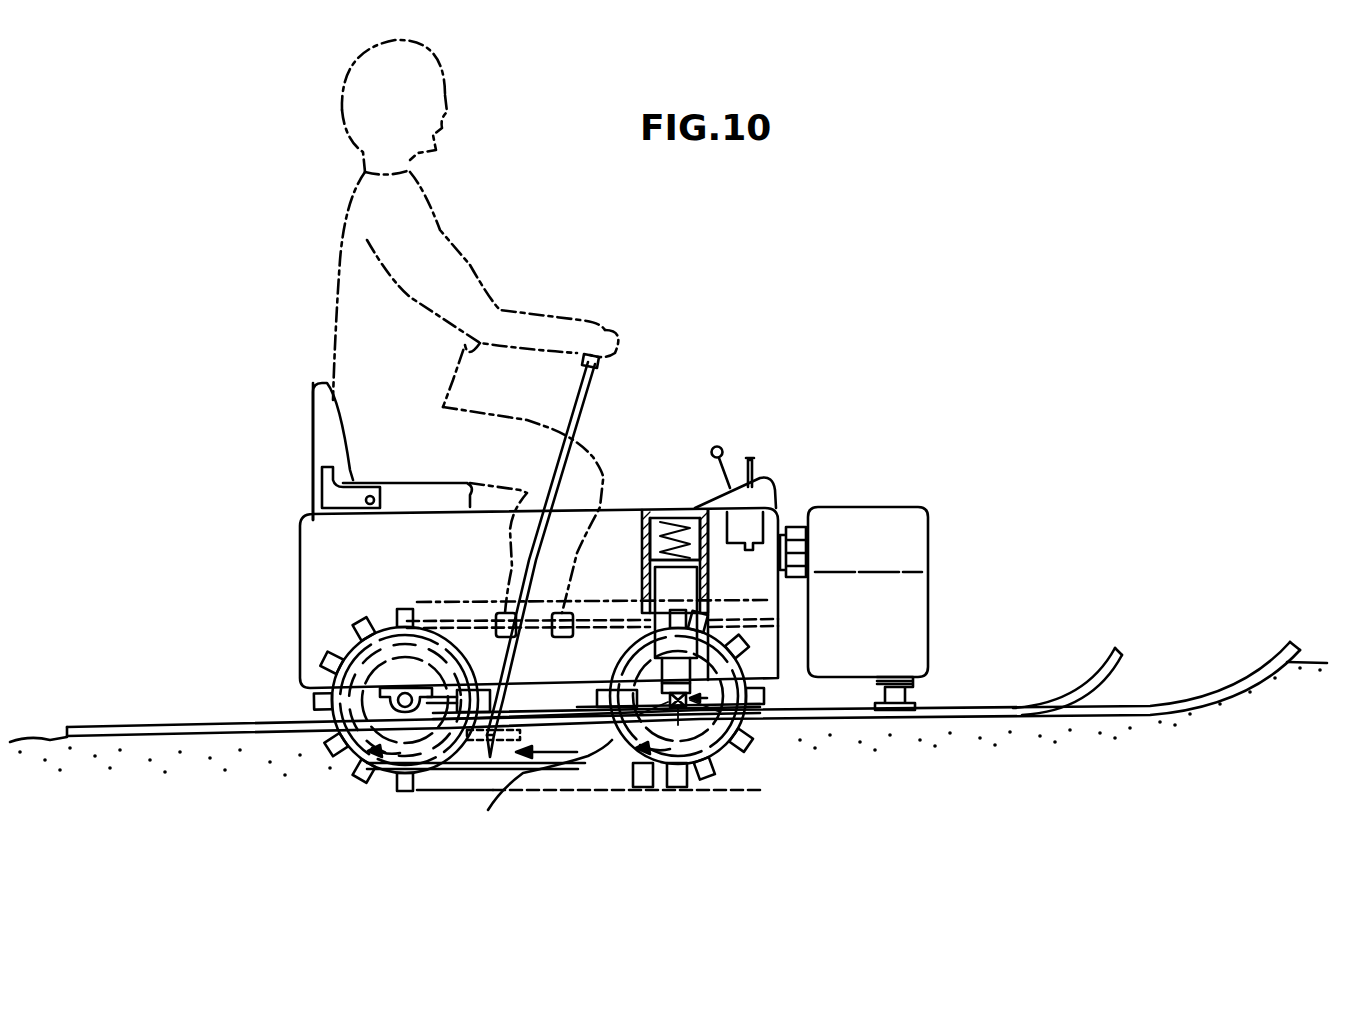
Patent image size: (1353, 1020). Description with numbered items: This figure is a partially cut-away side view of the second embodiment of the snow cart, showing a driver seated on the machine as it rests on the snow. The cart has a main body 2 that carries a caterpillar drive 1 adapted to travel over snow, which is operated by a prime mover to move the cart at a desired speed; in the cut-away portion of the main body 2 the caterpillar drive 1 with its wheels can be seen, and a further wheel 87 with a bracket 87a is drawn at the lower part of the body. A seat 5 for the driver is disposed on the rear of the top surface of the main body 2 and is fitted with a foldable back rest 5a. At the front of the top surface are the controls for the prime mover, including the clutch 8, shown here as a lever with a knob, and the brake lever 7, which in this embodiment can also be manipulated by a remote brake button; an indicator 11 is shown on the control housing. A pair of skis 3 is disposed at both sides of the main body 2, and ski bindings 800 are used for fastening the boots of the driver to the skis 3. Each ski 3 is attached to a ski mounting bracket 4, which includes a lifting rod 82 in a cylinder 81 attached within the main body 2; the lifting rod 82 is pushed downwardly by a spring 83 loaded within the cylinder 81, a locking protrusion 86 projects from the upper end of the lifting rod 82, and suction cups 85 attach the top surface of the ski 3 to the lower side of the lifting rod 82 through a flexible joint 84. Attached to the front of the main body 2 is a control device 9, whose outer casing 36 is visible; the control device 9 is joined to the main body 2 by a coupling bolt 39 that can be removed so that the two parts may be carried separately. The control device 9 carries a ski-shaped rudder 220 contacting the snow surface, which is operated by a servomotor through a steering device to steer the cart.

The caterpillar drive 1 is at (400, 788).
The main body 2 is at (318, 565).
The ski 3 is at (152, 726).
The ski mounting bracket 4 is at (721, 535).
The seat 5 is at (298, 488).
The foldable back rest 5a is at (323, 428).
The brake lever 7 is at (778, 505).
The clutch 8 is at (724, 447).
The control device 9 is at (905, 585).
The indicator 11 is at (752, 548).
The outer casing 36 is at (890, 620).
The coupling bolt 39 is at (800, 523).
The cylinder 81 is at (655, 512).
The lifting rod 82 is at (680, 633).
The spring 83 is at (685, 508).
The flexible joint 84 is at (713, 697).
The suction cup 85 is at (677, 710).
The locking protrusion 86 is at (643, 525).
The wheel 87 is at (723, 727).
The bracket 87a is at (617, 705).
The ski-shaped rudder 220 is at (1067, 690).
The ski binding 800 is at (473, 735).